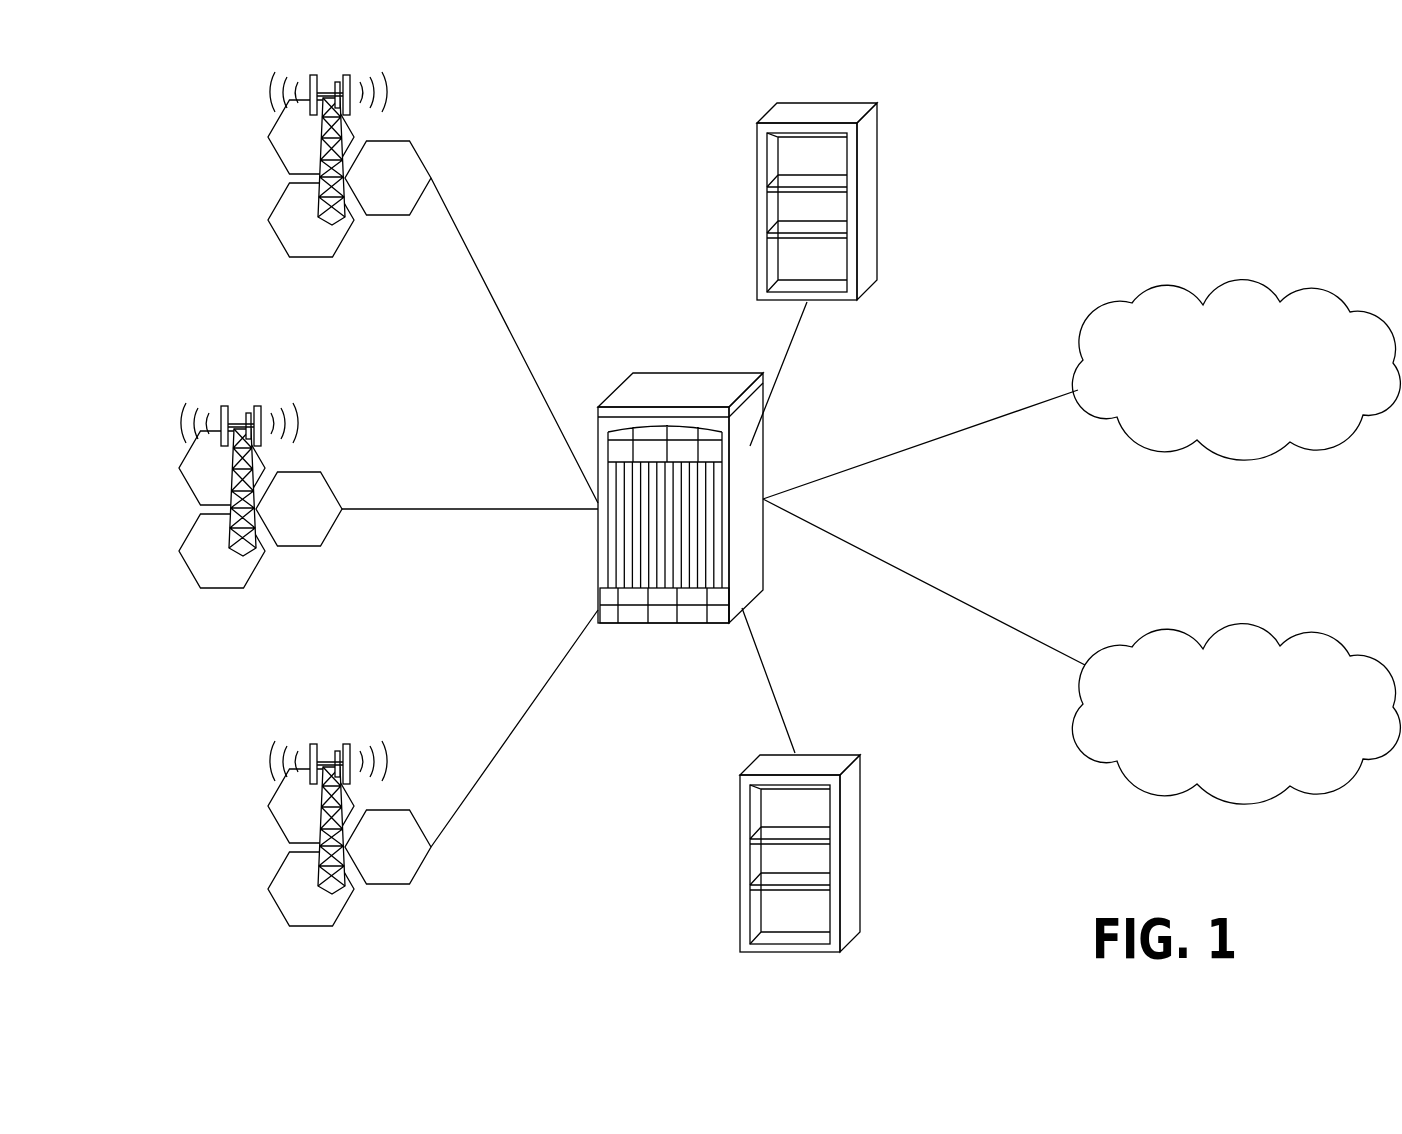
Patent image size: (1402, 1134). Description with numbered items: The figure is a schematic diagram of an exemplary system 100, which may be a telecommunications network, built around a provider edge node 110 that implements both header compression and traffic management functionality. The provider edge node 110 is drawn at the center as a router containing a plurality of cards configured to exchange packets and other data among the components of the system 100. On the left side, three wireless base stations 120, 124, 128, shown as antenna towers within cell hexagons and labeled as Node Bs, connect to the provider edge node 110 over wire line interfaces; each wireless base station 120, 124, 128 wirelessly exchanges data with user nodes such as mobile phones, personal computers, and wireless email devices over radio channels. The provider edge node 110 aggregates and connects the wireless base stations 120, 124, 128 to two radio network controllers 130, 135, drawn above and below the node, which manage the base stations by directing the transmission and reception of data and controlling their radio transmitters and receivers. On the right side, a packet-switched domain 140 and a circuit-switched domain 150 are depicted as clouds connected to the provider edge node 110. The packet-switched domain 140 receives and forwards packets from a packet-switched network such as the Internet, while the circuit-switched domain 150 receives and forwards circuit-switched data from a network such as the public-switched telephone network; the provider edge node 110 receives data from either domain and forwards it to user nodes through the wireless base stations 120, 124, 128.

The system 100 is at (611, 125).
The provider edge node 110 is at (657, 373).
The wireless base station 120 is at (268, 137).
The wireless base station 124 is at (179, 468).
The wireless base station 128 is at (268, 806).
The radio network controller 130 is at (878, 233).
The radio network controller 135 is at (862, 883).
The packet-switched domain 140 is at (1263, 285).
The circuit-switched domain 150 is at (1265, 628).